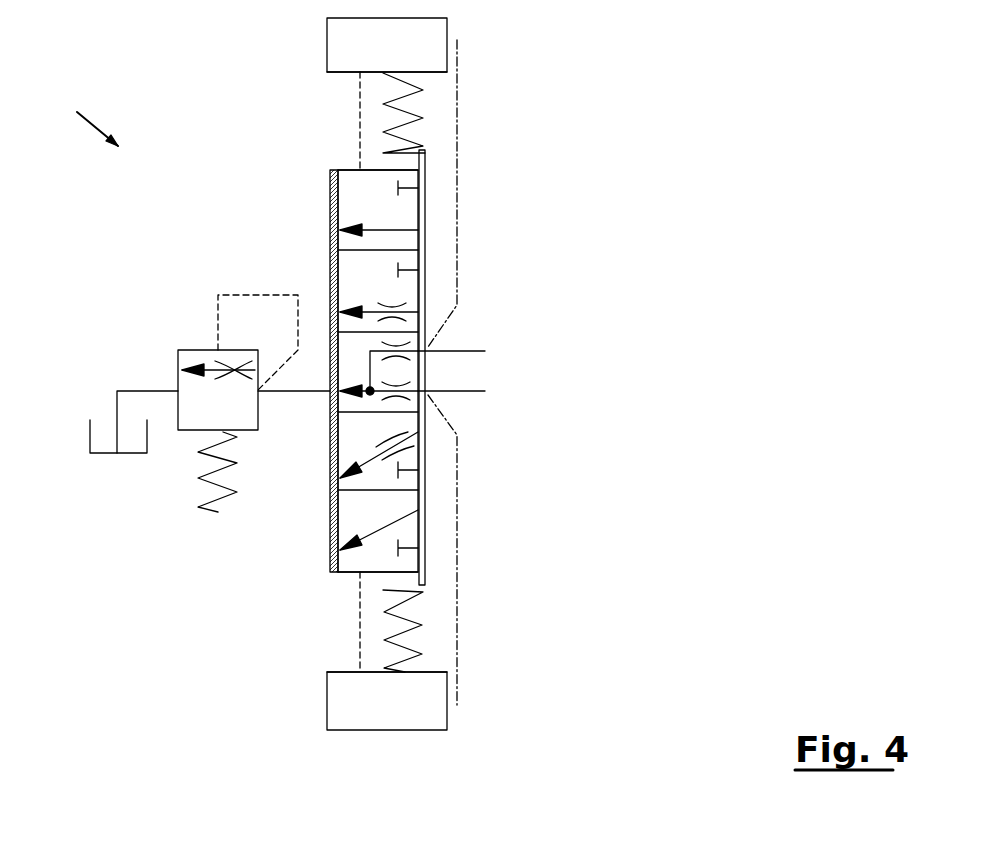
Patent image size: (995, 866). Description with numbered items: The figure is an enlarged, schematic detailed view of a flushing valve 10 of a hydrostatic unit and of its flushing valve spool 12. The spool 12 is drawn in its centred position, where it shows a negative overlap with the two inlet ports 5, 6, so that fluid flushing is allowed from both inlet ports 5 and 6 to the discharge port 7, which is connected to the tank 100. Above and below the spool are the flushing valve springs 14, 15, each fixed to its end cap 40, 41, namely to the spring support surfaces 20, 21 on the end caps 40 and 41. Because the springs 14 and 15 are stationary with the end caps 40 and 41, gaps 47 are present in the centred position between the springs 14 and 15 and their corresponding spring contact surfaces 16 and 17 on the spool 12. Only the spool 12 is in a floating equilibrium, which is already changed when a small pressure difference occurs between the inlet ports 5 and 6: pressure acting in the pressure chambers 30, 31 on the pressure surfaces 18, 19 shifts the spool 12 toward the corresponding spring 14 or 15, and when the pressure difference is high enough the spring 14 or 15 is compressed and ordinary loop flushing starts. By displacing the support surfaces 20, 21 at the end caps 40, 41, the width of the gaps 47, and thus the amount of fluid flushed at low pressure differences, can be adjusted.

The flushing valve 10 is at (78, 116).
The flushing valve spool 12 is at (350, 278).
The flushing valve spring 14 is at (398, 103).
The second flushing valve spring 15 is at (400, 632).
The spring contact surface 16 is at (398, 168).
The spring contact surface 17 is at (395, 572).
The pressure surface 18 is at (360, 165).
The pressure surface 19 is at (352, 573).
The spring support surface 20 is at (430, 72).
The spring support surface 21 is at (428, 672).
The inlet port 5 is at (420, 392).
The inlet port 6 is at (420, 350).
The discharge port 7 is at (333, 393).
The pressure chamber 30 is at (415, 40).
The end cap 40 is at (472, 45).
The pressure chamber 31 is at (428, 697).
The end cap 41 is at (474, 707).
The gap 47 is at (422, 160).
The tank 100 is at (97, 432).